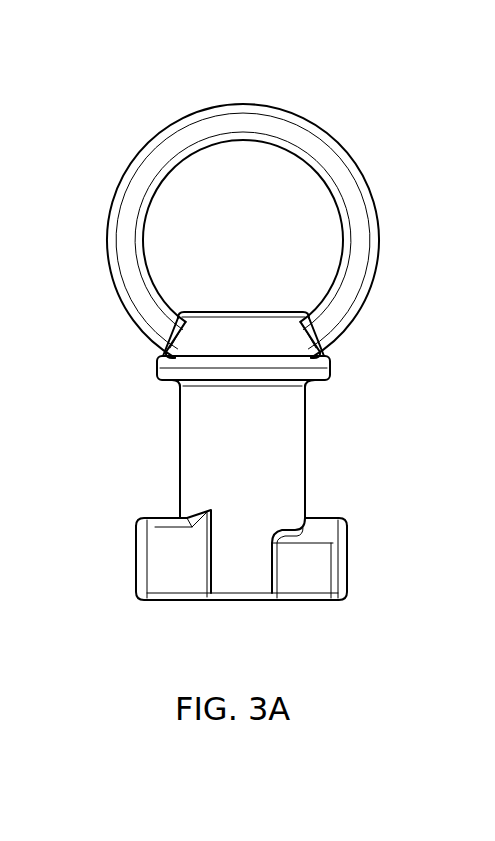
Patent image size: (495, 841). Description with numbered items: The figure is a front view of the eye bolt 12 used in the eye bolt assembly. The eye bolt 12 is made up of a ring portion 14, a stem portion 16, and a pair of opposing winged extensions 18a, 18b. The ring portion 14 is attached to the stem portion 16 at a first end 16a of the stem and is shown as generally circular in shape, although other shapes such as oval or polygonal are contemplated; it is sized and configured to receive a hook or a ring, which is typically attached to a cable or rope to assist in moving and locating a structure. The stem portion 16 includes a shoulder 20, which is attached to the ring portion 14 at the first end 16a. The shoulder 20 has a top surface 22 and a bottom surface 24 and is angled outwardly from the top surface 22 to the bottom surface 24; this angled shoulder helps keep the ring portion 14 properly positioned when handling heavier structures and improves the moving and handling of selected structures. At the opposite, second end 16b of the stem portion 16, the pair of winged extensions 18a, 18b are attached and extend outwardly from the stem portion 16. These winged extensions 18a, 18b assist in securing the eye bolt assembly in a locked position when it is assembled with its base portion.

The eye bolt 12 is at (398, 90).
The ring portion 14 is at (390, 199).
The stem portion 16 is at (316, 442).
The first end 16a is at (331, 354).
The second end 16b is at (347, 611).
The winged extension 18a is at (347, 560).
The winged extension 18b is at (131, 611).
The shoulder 20 is at (269, 305).
The top surface 22 is at (197, 306).
The bottom surface 24 is at (165, 390).